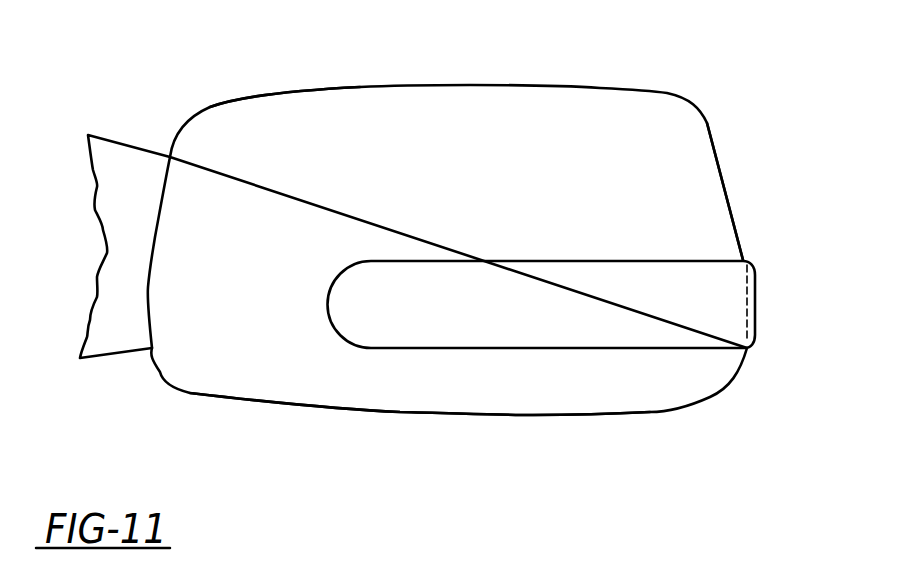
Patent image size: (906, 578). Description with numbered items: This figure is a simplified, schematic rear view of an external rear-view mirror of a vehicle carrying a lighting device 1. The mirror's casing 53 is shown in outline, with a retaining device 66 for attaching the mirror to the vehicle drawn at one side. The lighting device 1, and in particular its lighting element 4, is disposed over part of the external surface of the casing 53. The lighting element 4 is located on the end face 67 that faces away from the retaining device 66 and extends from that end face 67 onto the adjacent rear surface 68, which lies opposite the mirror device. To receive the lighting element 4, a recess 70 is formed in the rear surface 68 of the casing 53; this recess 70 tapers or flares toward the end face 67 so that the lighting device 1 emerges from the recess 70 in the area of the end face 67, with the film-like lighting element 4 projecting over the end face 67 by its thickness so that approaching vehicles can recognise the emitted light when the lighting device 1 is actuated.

The lighting device 1 is at (437, 364).
The lighting element 4 is at (703, 337).
The casing 53 is at (250, 370).
The retaining device 66 is at (118, 153).
The end face 67 is at (730, 193).
The rear surface 68 is at (290, 103).
The recess 70 is at (582, 240).